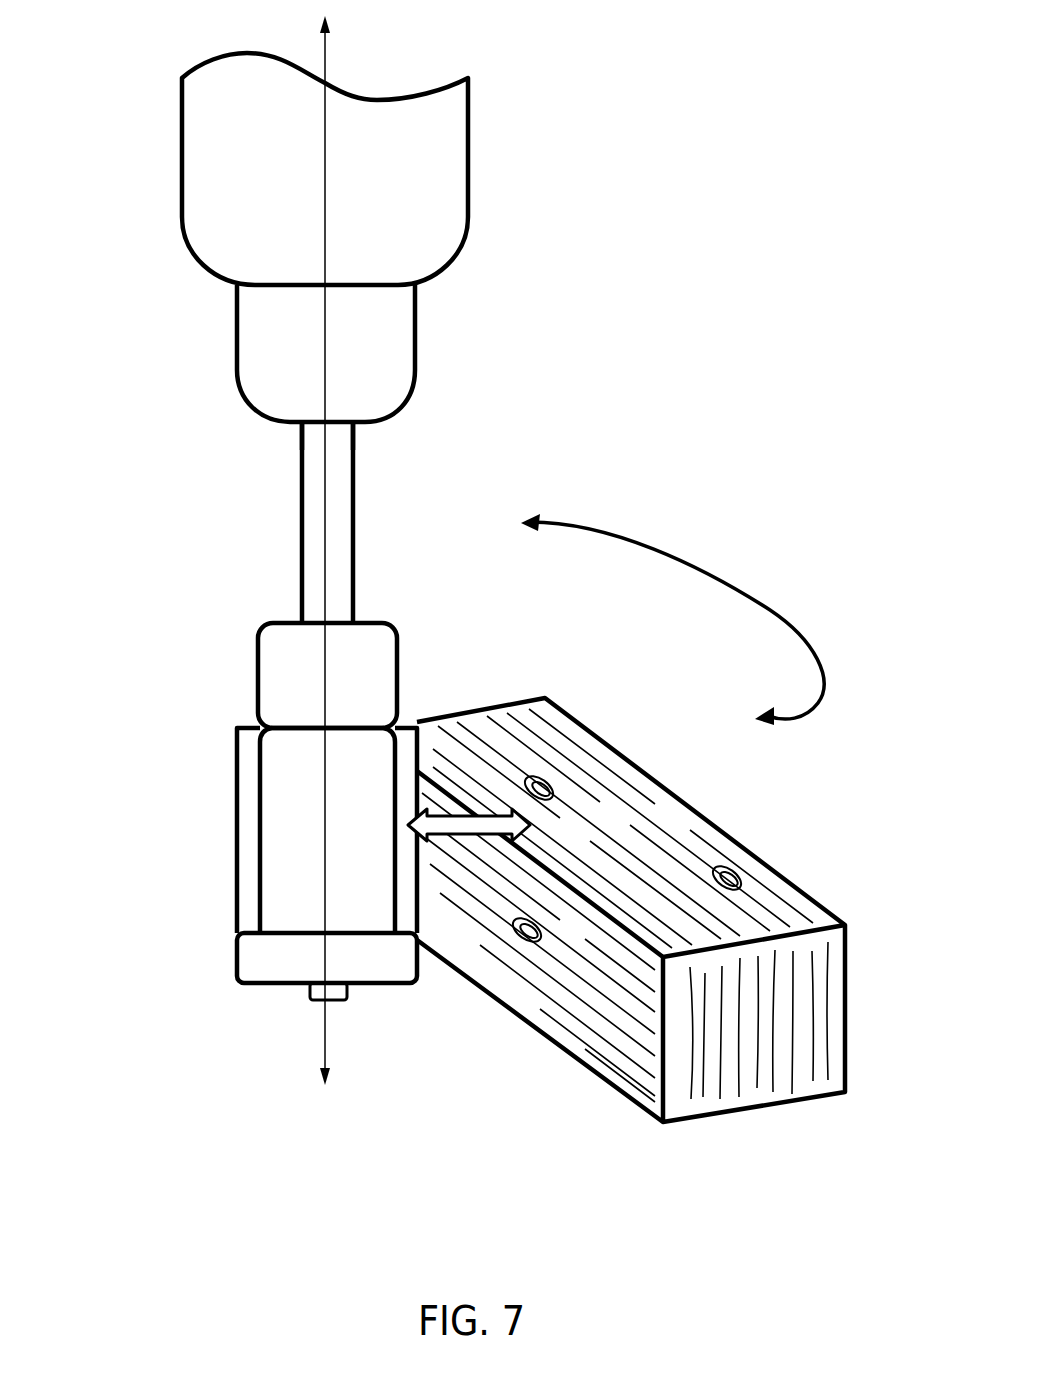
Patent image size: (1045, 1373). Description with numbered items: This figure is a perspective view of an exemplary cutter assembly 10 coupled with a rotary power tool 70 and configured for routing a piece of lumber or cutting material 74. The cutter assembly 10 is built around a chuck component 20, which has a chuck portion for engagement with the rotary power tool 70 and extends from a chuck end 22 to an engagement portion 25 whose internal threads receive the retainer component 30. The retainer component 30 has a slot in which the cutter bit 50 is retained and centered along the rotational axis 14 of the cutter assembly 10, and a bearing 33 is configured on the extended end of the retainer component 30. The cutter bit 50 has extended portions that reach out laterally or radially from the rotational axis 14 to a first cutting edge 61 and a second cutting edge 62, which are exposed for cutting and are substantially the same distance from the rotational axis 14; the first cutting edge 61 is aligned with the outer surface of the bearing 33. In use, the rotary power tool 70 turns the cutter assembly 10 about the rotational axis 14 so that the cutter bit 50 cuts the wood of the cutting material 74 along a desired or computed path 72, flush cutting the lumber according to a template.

The cutter assembly 10 is at (112, 79).
The rotational axis 14 is at (322, 1040).
The chuck component 20 is at (312, 522).
The chuck end 22 is at (353, 425).
The engagement portion 25 is at (292, 657).
The retainer component 30 is at (277, 868).
The bearing 33 is at (272, 966).
The cutter bit 50 is at (420, 757).
The first cutting edge 61 is at (402, 737).
The second cutting edge 62 is at (242, 822).
The rotary power tool 70 is at (253, 340).
The computed path 72 is at (678, 548).
The cutting material 74 is at (808, 1017).